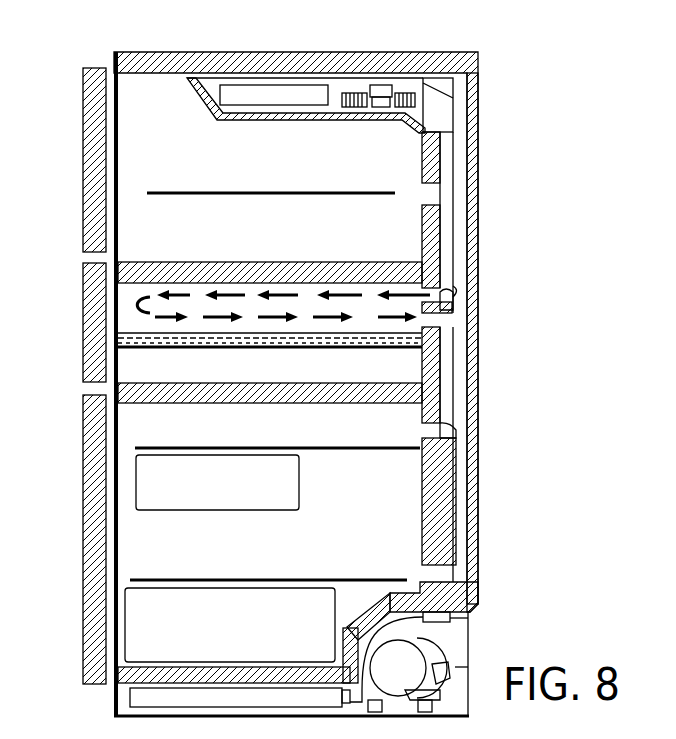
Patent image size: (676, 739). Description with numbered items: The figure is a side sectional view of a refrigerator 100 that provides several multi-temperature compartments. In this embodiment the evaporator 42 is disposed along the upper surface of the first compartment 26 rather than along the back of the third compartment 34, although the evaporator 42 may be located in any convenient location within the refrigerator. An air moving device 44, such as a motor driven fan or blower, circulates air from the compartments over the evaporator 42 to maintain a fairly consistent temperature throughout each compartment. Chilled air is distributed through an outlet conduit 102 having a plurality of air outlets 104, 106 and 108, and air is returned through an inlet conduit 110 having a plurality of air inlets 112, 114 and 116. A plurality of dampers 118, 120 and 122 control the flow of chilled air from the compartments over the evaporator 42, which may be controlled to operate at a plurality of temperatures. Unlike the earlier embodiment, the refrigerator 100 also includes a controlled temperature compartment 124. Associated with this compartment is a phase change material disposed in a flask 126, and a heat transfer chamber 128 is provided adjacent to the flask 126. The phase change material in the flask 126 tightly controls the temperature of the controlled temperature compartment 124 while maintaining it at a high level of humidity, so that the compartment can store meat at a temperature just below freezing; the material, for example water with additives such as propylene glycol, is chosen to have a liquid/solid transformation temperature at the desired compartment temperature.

The refrigerator 100 is at (483, 44).
The first interior compartment 26 is at (206, 164).
The third interior compartment 34 is at (207, 549).
The evaporator 42 is at (258, 105).
The air moving device 44 is at (366, 107).
The outlet conduit 102 is at (455, 165).
The air outlet 104 is at (420, 195).
The air outlet 106 is at (315, 263).
The air outlet 108 is at (423, 432).
The inlet conduit 110 is at (478, 328).
The air inlet 112 is at (423, 130).
The air inlet 114 is at (422, 320).
The air inlet 116 is at (427, 567).
The damper 118 is at (440, 197).
The damper 120 is at (455, 300).
The damper 122 is at (455, 428).
The controlled temperature compartment 124 is at (218, 374).
The flask 126 is at (258, 340).
The heat transfer chamber 128 is at (127, 310).